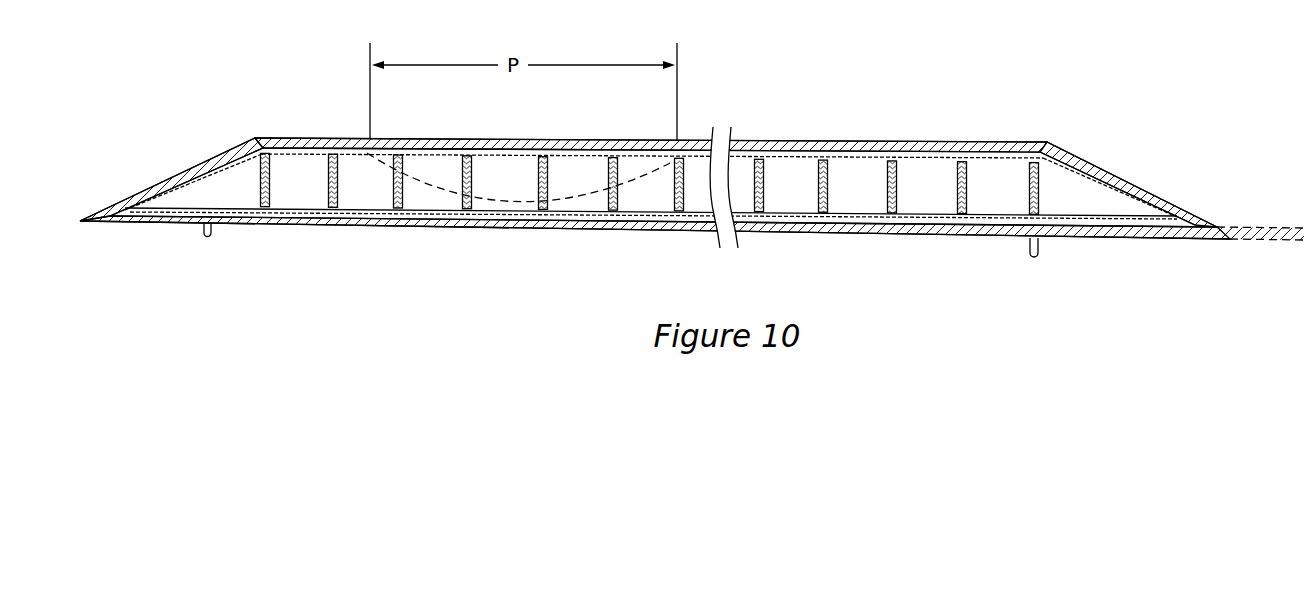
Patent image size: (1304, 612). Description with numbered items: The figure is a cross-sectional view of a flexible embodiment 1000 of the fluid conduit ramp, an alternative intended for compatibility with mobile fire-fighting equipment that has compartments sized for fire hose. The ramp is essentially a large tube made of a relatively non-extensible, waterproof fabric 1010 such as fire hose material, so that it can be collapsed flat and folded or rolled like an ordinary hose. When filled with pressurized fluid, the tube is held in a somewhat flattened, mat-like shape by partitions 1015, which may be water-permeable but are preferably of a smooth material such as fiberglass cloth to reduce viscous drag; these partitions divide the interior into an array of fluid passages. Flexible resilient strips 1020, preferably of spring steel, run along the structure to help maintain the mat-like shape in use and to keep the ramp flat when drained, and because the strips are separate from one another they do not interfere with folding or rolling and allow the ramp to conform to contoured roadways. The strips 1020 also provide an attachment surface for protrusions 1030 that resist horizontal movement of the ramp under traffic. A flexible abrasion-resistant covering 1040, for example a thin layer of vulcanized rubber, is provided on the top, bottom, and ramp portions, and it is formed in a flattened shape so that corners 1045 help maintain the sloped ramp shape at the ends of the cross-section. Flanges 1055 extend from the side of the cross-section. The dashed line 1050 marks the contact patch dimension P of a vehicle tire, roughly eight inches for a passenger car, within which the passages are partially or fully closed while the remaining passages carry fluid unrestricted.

The flexible embodiment 1000 is at (884, 112).
The waterproof fabric 1010 is at (937, 157).
The partitions 1015 is at (763, 180).
The flexible resilient strips 1020 is at (1000, 233).
The protrusions 1030 is at (1040, 257).
The flexible abrasion-resistant covering 1040 is at (682, 139).
The corners 1045 is at (95, 208).
The dashed line 1050 is at (577, 195).
The flanges 1055 is at (1253, 223).